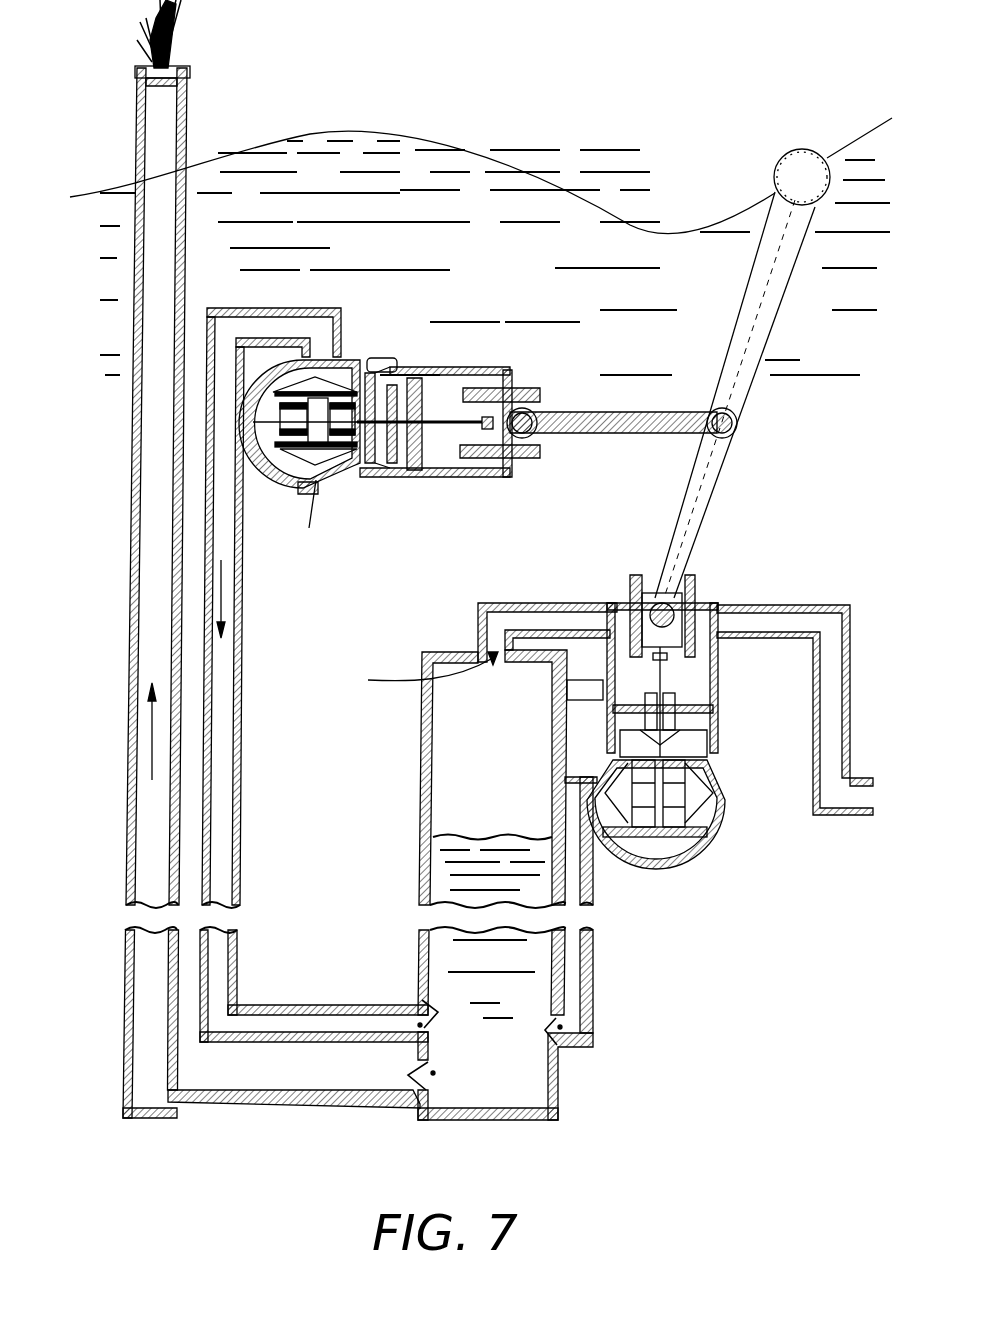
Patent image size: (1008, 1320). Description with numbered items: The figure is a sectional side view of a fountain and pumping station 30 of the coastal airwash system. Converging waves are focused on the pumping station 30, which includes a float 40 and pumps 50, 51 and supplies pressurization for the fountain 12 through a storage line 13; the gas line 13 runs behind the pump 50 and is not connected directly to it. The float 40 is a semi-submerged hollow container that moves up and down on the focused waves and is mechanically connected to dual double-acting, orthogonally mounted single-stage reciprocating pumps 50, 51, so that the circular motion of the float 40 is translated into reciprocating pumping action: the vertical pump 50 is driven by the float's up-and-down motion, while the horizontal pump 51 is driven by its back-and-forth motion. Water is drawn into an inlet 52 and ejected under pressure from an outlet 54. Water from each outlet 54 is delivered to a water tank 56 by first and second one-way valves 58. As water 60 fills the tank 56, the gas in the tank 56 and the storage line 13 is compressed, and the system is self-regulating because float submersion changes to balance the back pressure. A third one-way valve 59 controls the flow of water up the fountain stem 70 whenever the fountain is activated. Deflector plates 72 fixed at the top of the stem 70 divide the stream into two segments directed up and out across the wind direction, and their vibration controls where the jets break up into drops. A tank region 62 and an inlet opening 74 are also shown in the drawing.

The fountain 12 is at (110, 508).
The storage line 13 is at (545, 604).
The pumping station 30 is at (782, 350).
The float 40 is at (792, 172).
The pump 50 is at (695, 850).
The pump 51 is at (434, 372).
The inlet 52 is at (292, 521).
The outlet 54 is at (325, 358).
The water tank 56 is at (560, 1098).
The one-way valve 58 is at (437, 1003).
The one-way valve 59 is at (412, 1090).
The water 60 is at (504, 1088).
The reservoir 62 is at (505, 748).
The fountain stem 70 is at (126, 778).
The deflector plate 72 is at (177, 40).
The inlet opening 74 is at (413, 674).